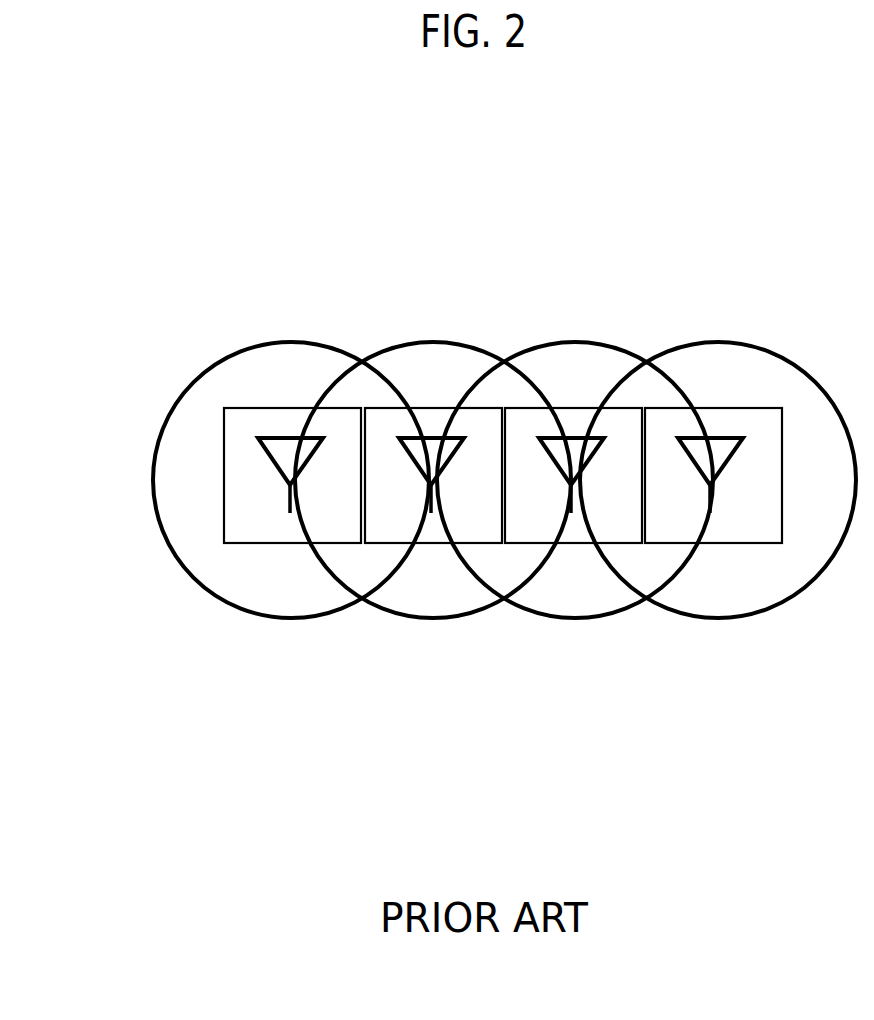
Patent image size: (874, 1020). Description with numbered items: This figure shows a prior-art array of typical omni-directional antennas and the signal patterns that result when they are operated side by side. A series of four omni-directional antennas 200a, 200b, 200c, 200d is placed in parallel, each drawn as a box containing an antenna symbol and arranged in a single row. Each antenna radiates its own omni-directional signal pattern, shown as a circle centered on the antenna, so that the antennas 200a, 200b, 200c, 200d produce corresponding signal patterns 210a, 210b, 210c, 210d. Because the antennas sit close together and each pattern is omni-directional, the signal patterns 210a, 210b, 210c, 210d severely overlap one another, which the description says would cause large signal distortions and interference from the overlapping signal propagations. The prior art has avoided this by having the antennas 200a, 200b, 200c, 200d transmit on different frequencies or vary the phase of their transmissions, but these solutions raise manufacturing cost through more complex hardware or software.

The omni-directional antenna 200a is at (260, 537).
The omni-directional antenna 200b is at (472, 537).
The omni-directional antenna 200c is at (605, 537).
The omni-directional antenna 200d is at (742, 540).
The signal pattern 210a is at (284, 340).
The signal pattern 210b is at (450, 343).
The signal pattern 210c is at (593, 343).
The signal pattern 210d is at (763, 350).